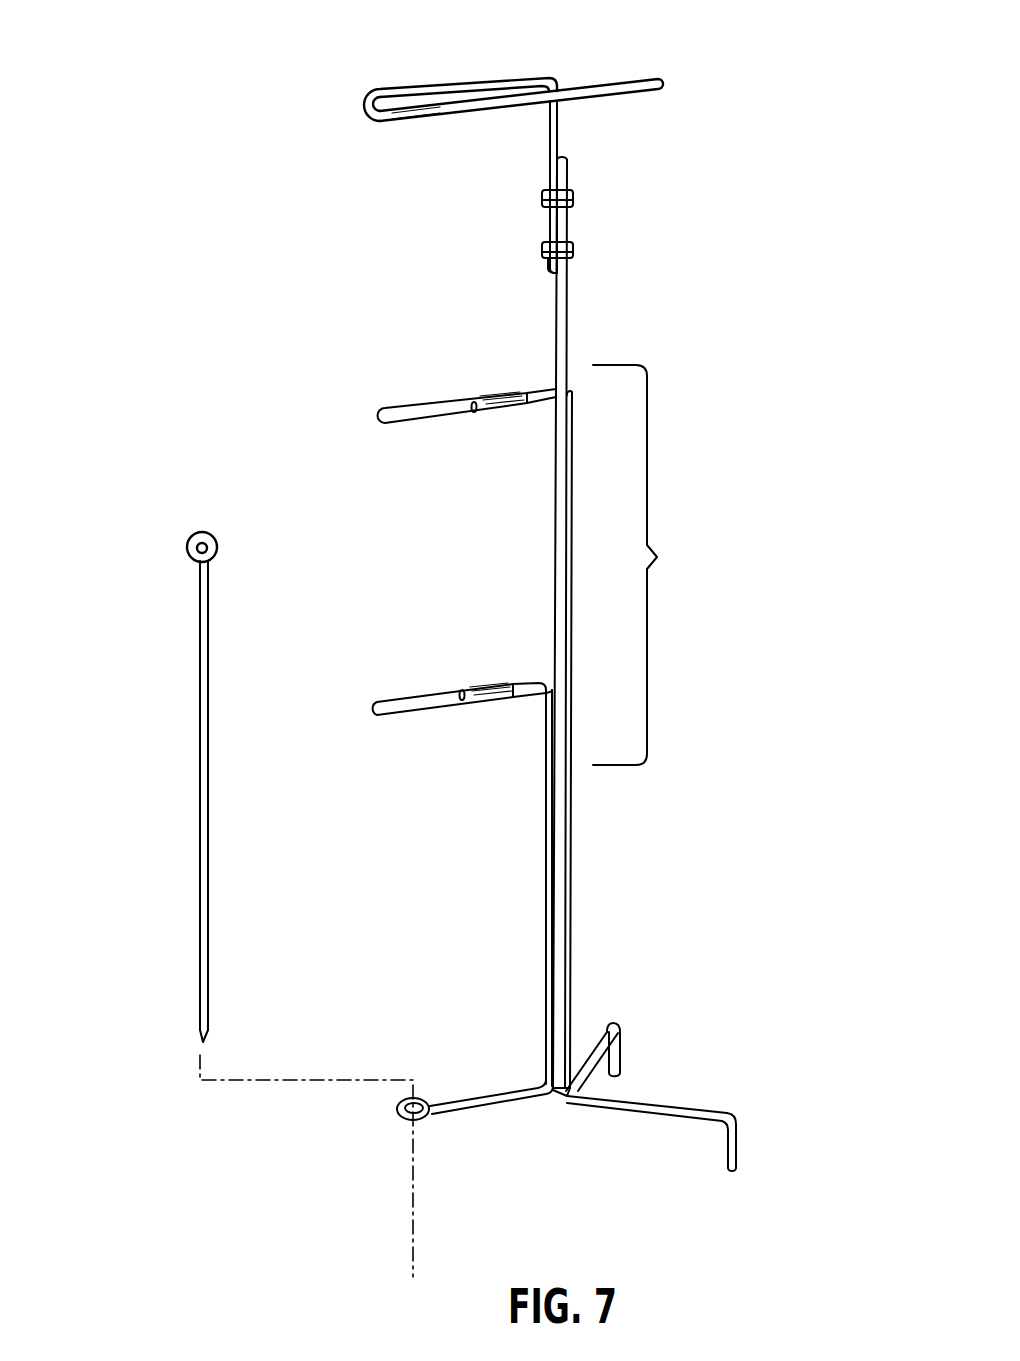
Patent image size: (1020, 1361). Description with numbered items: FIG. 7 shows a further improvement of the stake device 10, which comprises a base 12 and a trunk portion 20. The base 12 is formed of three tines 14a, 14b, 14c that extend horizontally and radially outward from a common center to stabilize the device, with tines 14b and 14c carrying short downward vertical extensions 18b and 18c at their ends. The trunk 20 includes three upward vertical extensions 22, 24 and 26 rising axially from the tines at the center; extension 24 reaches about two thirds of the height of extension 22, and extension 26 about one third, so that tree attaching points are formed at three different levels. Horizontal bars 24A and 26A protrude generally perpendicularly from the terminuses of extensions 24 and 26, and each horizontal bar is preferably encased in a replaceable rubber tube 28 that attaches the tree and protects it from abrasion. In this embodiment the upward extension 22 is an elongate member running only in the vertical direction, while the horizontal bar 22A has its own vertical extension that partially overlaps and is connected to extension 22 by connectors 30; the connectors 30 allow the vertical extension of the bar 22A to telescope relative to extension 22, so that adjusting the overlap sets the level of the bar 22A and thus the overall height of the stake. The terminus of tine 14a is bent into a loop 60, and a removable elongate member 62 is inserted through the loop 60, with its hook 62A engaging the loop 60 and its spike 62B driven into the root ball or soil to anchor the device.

The stake device 10 is at (381, 516).
The base 12 is at (372, 1103).
The tine 14a is at (473, 1097).
The tine 14b is at (596, 1036).
The tine 14c is at (690, 1107).
The downward vertical extension 18b is at (622, 1052).
The downward vertical extension 18c is at (739, 1150).
The trunk portion 20 is at (651, 565).
The upward vertical extension 22 is at (568, 302).
The horizontal bar 22A is at (546, 77).
The upward vertical extension 24 is at (570, 497).
The horizontal bar 24A is at (545, 387).
The upward vertical extension 26 is at (546, 853).
The horizontal bar 26A is at (540, 680).
The rubber tube 28 is at (628, 100).
The connector 30 is at (543, 196).
The loop 60 is at (404, 1120).
The elongate member 62 is at (200, 738).
The hook 62A is at (188, 538).
The spike 62B is at (197, 1030).